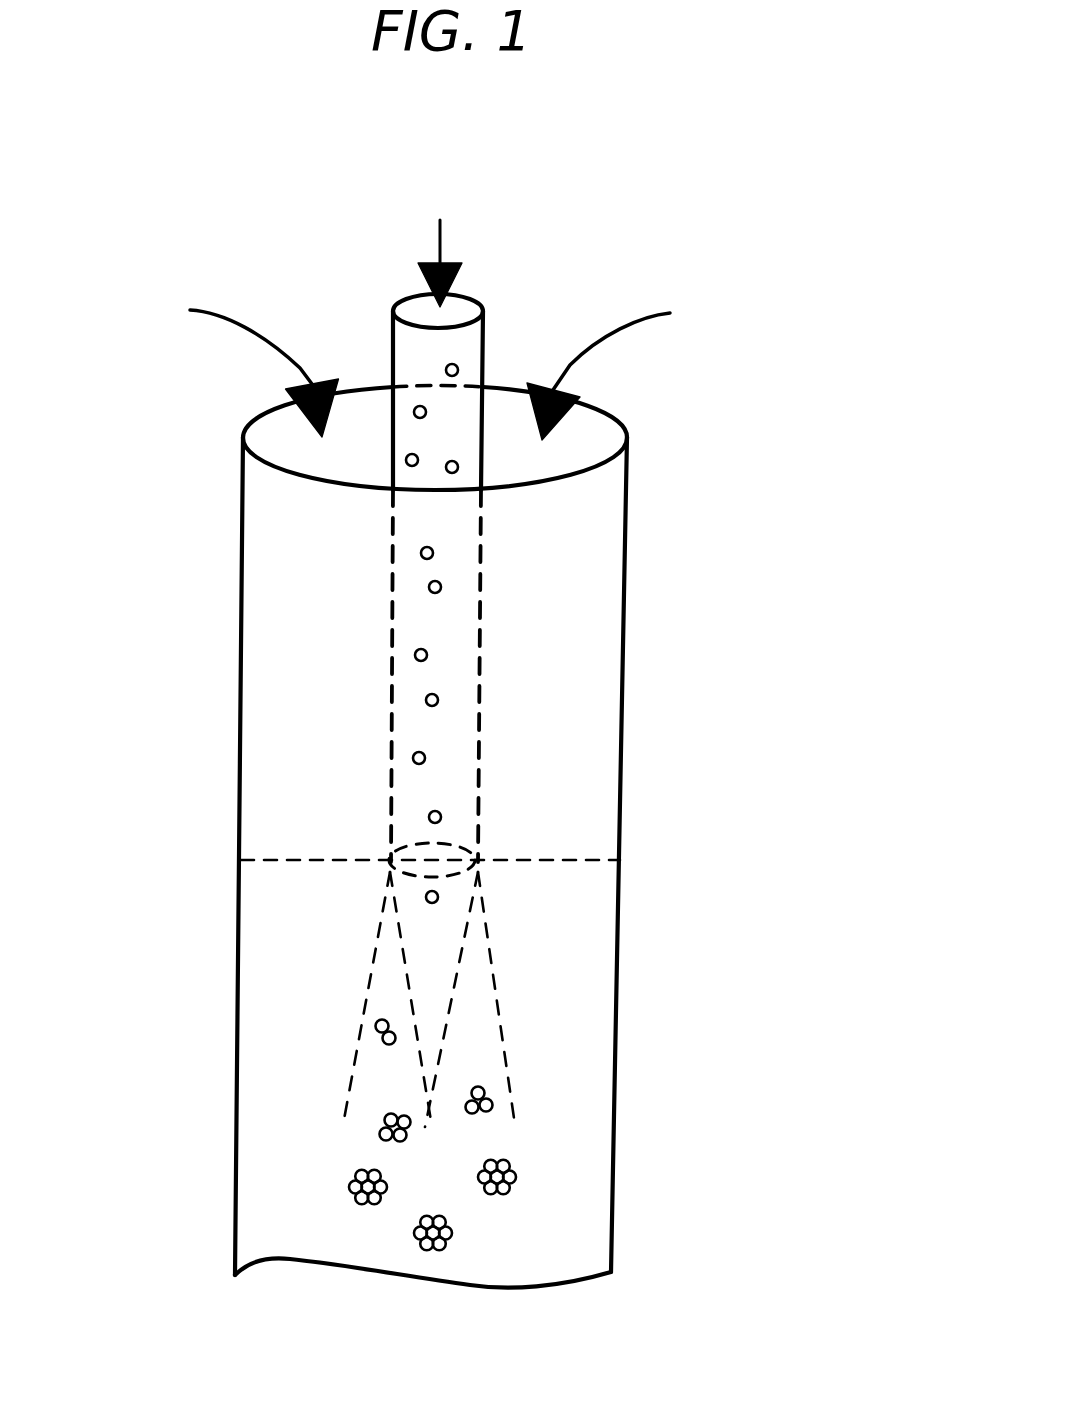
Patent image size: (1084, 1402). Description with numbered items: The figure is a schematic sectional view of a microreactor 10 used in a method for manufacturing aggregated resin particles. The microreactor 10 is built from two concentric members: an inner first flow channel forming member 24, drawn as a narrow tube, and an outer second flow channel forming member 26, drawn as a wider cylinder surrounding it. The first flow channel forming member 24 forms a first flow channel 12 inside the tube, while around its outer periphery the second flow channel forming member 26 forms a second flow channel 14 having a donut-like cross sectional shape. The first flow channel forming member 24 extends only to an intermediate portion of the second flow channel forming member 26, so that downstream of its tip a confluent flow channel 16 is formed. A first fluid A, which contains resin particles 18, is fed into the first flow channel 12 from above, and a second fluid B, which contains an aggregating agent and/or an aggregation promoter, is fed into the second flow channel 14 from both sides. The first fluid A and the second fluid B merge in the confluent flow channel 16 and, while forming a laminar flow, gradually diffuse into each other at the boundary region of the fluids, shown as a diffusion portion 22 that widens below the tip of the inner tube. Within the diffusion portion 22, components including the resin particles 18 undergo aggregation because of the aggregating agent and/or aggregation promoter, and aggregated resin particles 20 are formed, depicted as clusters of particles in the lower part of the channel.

The microreactor 10 is at (315, 290).
The first flow channel 12 is at (443, 625).
The second flow channel 14 is at (555, 692).
The confluent flow channel 16 is at (567, 992).
The resin particles 18 is at (420, 553).
The aggregated resin particles 20 is at (513, 1168).
The diffusion portion 22 is at (377, 1065).
The first flow channel forming member 24 is at (481, 294).
The second flow channel forming member 26 is at (614, 417).
The first fluid A is at (440, 230).
The second fluid B is at (423, 361).